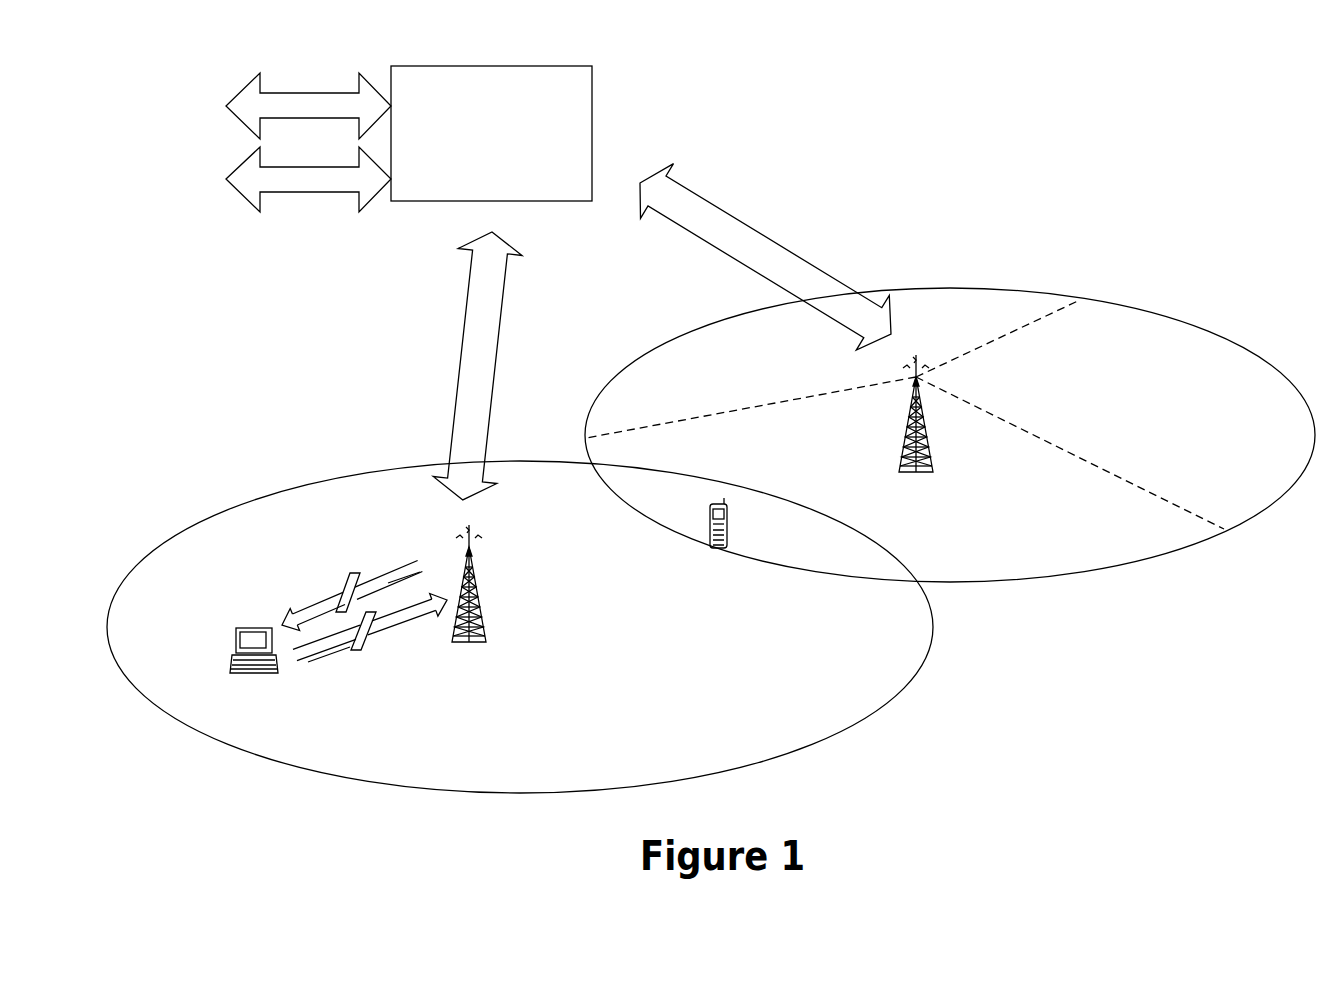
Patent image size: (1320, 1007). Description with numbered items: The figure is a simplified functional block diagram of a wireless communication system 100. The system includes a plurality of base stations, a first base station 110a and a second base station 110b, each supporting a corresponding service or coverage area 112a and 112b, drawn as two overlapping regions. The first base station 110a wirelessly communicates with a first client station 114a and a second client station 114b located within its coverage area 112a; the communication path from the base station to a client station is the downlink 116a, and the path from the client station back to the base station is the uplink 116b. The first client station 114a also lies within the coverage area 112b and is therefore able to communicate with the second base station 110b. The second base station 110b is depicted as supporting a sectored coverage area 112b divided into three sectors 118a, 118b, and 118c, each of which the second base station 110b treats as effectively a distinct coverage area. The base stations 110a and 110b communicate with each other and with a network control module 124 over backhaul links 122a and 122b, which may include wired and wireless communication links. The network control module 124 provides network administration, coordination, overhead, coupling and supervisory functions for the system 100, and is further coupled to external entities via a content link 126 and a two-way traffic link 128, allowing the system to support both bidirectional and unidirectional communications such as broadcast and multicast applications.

The wireless communication system 100 is at (1088, 54).
The first base station 110a is at (520, 587).
The second base station 110b is at (972, 432).
The coverage area 112a is at (225, 507).
The sectored coverage area 112b is at (1173, 320).
The first client station 114a is at (732, 535).
The second client station 114b is at (235, 650).
The downlink 116a is at (390, 571).
The uplink 116b is at (370, 643).
The sector 118a is at (1038, 552).
The sector 118b is at (841, 348).
The sector 118c is at (1267, 434).
The backhaul link 122a is at (498, 337).
The backhaul link 122b is at (805, 261).
The network control module 124 is at (520, 66).
The content link 126 is at (257, 80).
The two-way traffic link 128 is at (243, 168).